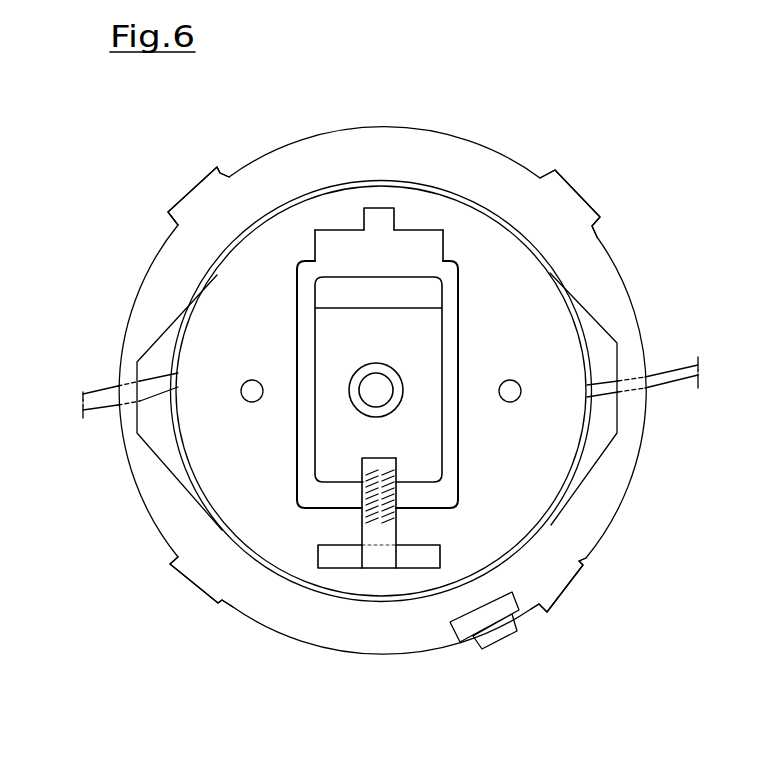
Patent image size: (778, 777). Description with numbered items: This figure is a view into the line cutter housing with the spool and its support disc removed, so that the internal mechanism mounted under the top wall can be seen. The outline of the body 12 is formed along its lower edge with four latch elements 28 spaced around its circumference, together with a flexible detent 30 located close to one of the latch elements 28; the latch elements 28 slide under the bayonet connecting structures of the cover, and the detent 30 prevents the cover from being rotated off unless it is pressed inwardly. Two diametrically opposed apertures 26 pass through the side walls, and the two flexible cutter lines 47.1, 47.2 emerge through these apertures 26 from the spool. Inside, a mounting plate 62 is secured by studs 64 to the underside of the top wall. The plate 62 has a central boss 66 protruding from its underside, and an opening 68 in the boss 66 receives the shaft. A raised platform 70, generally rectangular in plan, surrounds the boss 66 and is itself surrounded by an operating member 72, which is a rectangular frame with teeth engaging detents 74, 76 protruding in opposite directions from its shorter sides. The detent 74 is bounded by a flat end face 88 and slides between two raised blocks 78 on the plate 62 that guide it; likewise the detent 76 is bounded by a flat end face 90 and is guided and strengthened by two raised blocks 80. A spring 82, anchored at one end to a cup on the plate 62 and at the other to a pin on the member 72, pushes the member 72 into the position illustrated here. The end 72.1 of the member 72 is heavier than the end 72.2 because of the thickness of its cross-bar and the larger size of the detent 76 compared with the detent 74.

The body 12 is at (350, 128).
The apertures 26 is at (125, 398).
The latch elements 28 is at (190, 202).
The flexible detent 30 is at (495, 632).
The line 47.1 is at (92, 392).
The line 47.2 is at (674, 381).
The mounting plate 62 is at (547, 323).
The studs 64 is at (240, 392).
The central boss 66 is at (397, 373).
The opening 68 is at (390, 403).
The raised platform 70 is at (333, 322).
The operating member 72 is at (296, 450).
The end of the member 72.1 is at (490, 508).
The end of the member 72.2 is at (458, 262).
The teeth engaging detent 74 is at (390, 213).
The teeth engaging detent 76 is at (390, 557).
The raised blocks 78 is at (332, 240).
The raised blocks 80 is at (336, 560).
The spring 82 is at (367, 517).
The flat end face 88 is at (380, 208).
The flat end face 90 is at (378, 548).